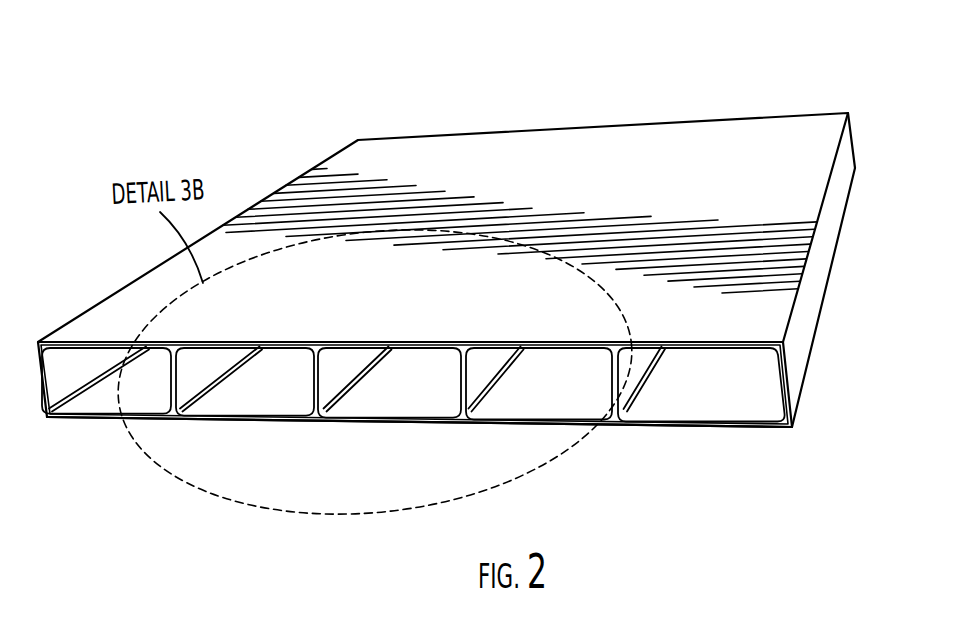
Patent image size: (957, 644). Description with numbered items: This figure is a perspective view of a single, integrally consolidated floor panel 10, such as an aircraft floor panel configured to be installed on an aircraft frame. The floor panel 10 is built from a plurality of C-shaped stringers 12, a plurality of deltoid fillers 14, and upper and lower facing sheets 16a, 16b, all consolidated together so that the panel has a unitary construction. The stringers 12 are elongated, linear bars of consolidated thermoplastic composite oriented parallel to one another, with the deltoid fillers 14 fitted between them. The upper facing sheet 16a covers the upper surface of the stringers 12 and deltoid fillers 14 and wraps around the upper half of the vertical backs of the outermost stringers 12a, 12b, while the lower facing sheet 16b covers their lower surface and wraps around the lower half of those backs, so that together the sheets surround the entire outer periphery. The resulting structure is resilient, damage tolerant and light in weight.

The floor panel 10 is at (590, 74).
The C-shaped stringers 12 is at (206, 384).
The outermost stringer 12a is at (76, 385).
The outermost stringer 12b is at (779, 386).
The deltoid fillers 14 is at (613, 347).
The upper facing sheet 16a is at (812, 131).
The lower facing sheet 16b is at (660, 426).